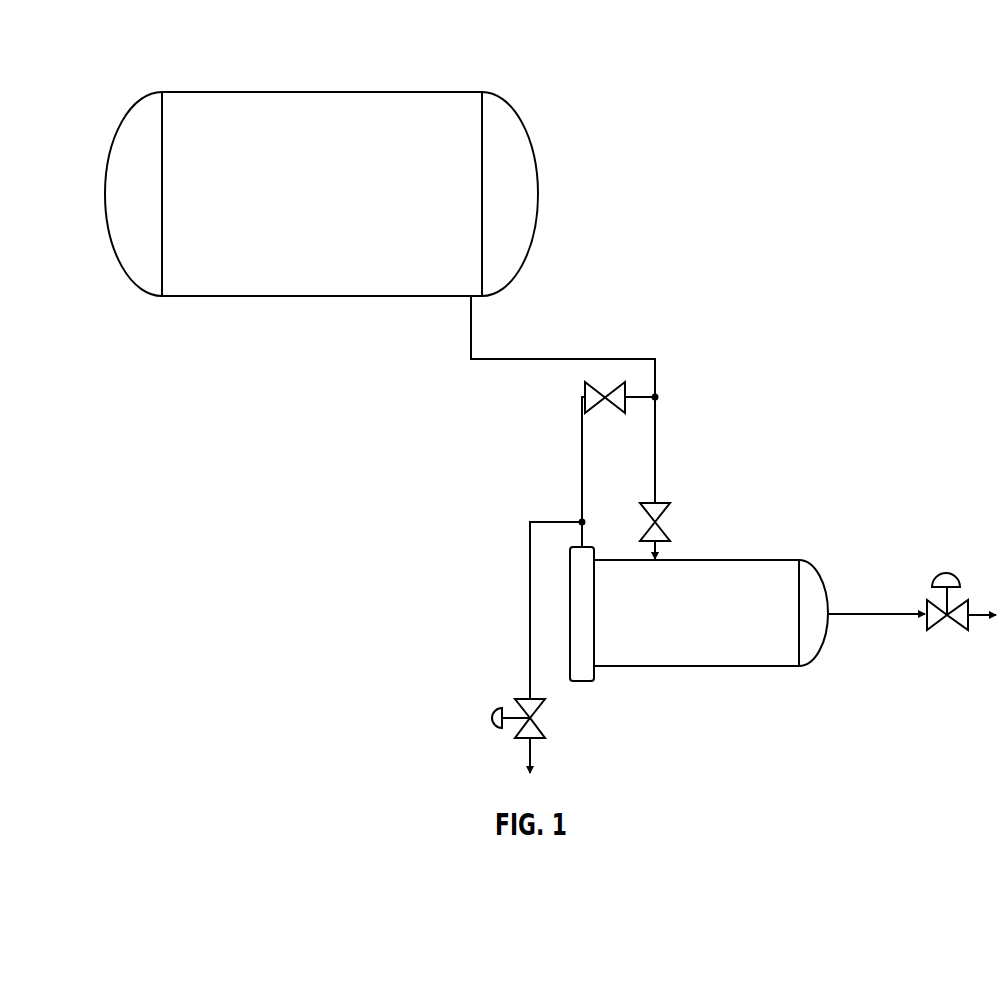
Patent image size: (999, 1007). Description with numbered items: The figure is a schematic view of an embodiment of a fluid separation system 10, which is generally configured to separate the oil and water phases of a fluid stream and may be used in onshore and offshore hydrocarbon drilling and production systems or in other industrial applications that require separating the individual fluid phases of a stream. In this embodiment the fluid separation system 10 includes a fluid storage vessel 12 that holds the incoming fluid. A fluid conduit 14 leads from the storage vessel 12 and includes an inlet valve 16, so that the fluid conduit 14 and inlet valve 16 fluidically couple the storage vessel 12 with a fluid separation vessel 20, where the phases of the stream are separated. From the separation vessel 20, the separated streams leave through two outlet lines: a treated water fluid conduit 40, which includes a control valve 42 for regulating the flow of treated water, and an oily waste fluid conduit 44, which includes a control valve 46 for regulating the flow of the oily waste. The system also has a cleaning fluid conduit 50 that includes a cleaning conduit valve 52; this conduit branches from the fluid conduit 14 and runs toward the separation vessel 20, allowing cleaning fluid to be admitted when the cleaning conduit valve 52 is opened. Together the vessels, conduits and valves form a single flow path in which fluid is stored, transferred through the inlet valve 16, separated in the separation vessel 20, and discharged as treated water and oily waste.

The fluid separation system 10 is at (92, 88).
The fluid storage vessel 12 is at (195, 296).
The fluid conduit 14 is at (471, 327).
The inlet valve 16 is at (667, 527).
The fluid separation vessel 20 is at (752, 558).
The treated water fluid conduit 40 is at (858, 612).
The control valve 42 is at (955, 630).
The oily waste fluid conduit 44 is at (528, 622).
The control valve 46 is at (490, 716).
The cleaning fluid conduit 50 is at (580, 472).
The cleaning conduit valve 52 is at (610, 410).